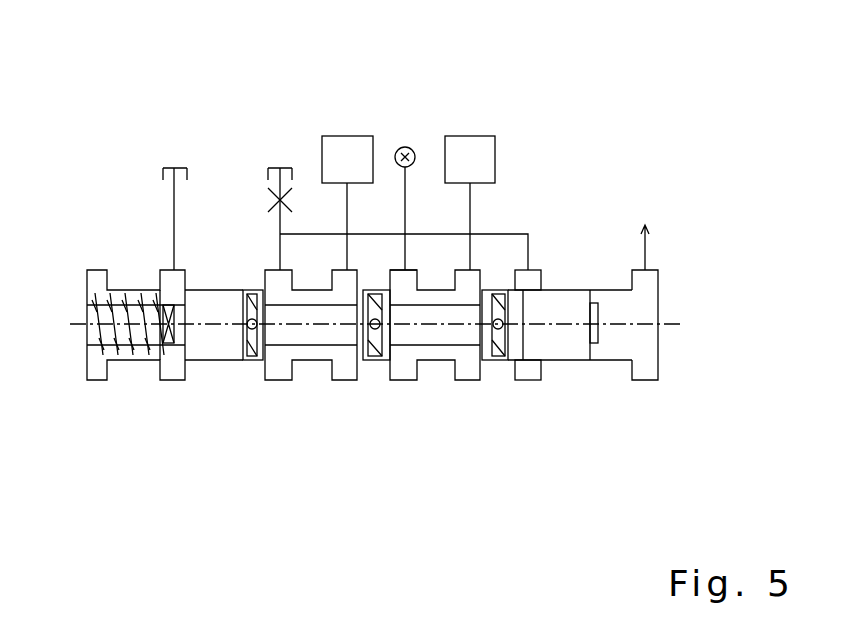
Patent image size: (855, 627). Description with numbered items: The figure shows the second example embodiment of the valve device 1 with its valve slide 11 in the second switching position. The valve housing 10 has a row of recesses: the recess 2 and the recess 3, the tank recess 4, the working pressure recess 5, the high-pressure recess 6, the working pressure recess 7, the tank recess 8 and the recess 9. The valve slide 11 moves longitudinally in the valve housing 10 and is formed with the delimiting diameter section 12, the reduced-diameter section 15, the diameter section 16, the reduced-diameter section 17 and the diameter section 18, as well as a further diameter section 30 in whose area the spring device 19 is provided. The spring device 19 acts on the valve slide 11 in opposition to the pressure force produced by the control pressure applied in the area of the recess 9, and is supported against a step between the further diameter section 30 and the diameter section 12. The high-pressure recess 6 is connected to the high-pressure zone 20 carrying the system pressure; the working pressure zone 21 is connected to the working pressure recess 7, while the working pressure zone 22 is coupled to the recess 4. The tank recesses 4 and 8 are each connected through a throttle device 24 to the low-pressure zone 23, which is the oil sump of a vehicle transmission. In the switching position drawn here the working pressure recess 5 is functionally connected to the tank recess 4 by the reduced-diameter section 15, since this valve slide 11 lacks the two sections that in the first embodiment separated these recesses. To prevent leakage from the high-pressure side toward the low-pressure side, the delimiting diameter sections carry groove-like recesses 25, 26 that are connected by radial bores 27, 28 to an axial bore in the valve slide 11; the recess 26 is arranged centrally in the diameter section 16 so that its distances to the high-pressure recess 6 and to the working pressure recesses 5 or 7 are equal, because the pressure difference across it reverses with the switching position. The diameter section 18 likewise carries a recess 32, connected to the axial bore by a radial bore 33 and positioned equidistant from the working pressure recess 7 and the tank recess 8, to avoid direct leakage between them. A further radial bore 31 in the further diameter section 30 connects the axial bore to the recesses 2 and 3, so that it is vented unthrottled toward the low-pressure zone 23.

The valve device 1 is at (127, 178).
The recess 2 is at (97, 380).
The recess 3 is at (183, 380).
The tank recess 4 is at (282, 380).
The working pressure recess 5 is at (342, 370).
The high-pressure recess 6 is at (405, 380).
The working pressure recess 7 is at (468, 362).
The tank recess 8 is at (525, 362).
The recess 9 is at (645, 370).
The valve housing 10 is at (617, 288).
The valve slide 11 is at (576, 271).
The diameter section 12 is at (210, 350).
The reduced-diameter section 15 is at (315, 330).
The diameter section 16 is at (365, 363).
The reduced-diameter section 17 is at (436, 288).
The diameter section 18 is at (567, 333).
The spring device 19 is at (80, 332).
The high-pressure zone 20 is at (378, 288).
The working pressure zone 21 is at (475, 143).
The working pressure zone 22 is at (333, 144).
The low-pressure zone 23 is at (163, 167).
The throttle device 24 is at (270, 198).
The groove-like recess 25 is at (247, 362).
The groove-like recess 26 is at (398, 285).
The radial bore 27 is at (248, 288).
The radial bore 28 is at (363, 323).
The further diameter section 30 is at (130, 340).
The further radial bore 31 is at (175, 330).
The recess 32 is at (505, 362).
The radial bore 33 is at (505, 315).